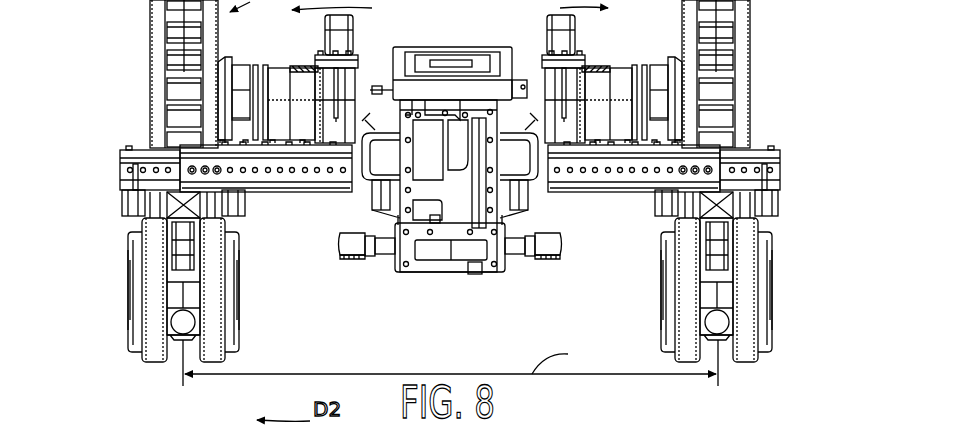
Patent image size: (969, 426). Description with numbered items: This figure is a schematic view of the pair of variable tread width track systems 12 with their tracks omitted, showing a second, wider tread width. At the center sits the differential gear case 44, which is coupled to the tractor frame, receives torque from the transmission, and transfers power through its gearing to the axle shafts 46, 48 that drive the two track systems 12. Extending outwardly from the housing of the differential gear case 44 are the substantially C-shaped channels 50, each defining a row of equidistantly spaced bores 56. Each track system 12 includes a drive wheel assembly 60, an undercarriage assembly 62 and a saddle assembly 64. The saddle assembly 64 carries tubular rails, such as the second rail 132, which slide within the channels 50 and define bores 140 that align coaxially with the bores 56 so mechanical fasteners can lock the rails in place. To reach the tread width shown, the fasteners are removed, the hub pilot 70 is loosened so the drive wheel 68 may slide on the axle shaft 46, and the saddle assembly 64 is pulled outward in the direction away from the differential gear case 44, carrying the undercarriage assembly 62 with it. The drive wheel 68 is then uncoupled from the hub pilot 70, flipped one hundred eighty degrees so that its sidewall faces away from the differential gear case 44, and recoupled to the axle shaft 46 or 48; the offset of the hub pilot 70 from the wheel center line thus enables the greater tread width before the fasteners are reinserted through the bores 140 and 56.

The track system 12 is at (757, 418).
The differential gear case 44 is at (460, 33).
The axle shaft 46 is at (245, 103).
The axle shaft 48 is at (655, 104).
The channel 50 is at (249, 200).
The bores 56 is at (277, 184).
The drive wheel assembly 60 is at (125, 45).
The undercarriage assembly 62 is at (113, 308).
The saddle assembly 64 is at (97, 155).
The drive wheel 68 is at (766, 58).
The hub pilot 70 is at (228, 40).
The second rail 132 is at (100, 170).
The bores 140 is at (134, 178).